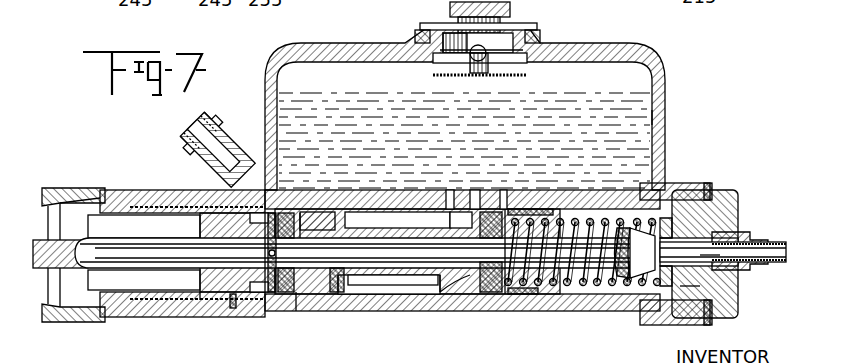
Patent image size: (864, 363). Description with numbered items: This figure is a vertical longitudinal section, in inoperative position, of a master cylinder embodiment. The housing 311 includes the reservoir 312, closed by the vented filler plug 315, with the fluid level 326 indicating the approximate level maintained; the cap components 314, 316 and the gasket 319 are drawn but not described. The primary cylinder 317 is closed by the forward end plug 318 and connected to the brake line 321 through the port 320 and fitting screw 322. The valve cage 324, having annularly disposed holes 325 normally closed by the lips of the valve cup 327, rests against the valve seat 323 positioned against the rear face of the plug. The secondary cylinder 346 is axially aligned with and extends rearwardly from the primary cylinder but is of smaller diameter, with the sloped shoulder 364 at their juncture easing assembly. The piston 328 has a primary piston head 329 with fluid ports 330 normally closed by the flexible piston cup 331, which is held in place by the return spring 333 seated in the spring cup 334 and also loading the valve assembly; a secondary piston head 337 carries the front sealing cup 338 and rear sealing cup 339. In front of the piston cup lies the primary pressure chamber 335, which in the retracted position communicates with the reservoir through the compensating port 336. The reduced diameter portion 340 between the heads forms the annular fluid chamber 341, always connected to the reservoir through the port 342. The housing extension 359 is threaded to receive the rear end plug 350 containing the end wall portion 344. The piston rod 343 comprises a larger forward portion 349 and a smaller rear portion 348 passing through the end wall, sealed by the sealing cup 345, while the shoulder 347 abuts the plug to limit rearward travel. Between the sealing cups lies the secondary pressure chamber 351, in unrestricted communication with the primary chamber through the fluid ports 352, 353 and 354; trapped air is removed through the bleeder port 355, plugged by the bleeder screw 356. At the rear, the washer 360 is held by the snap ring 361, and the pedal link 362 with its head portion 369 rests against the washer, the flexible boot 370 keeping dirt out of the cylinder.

The housing 311 is at (660, 129).
The reservoir 312 is at (640, 119).
The vent rod 314 is at (528, 75).
The vented filler plug 315 is at (511, 6).
The cap flange 316 is at (450, 16).
The primary cylinder 317 is at (596, 208).
The forward end plug 318 is at (730, 191).
The gasket 319 is at (712, 186).
The port 320 is at (704, 256).
The brake line 321 is at (787, 246).
The fitting screw 322 is at (750, 232).
The valve seat 323 is at (690, 291).
The valve cage 324 is at (672, 318).
The annularly disposed holes 325 is at (628, 296).
The fluid level 326 is at (348, 93).
The valve cup 327 is at (604, 296).
The piston 328 is at (445, 294).
The primary piston head 329 is at (500, 294).
The fluid ports 330 is at (506, 296).
The piston cup 331 is at (546, 302).
The return spring 333 is at (612, 290).
The spring cup 334 is at (548, 180).
The primary pressure chamber 335 is at (545, 212).
The compensating port 336 is at (504, 196).
The secondary piston head 337 is at (322, 215).
The front sealing cup 338 is at (330, 294).
The rear sealing cup 339 is at (308, 312).
The reduced diameter portion 340 is at (382, 284).
The annular fluid chamber 341 is at (380, 251).
The port 342 is at (476, 194).
The piston rod 343 is at (186, 263).
The end wall portion 344 is at (202, 302).
The sealing cup 345 is at (234, 310).
The secondary cylinder 346 is at (420, 292).
The shoulder 347 is at (272, 312).
The rear portion 348 is at (182, 243).
The forward portion 349 is at (296, 180).
The rear end plug 350 is at (140, 317).
The secondary pressure chamber 351 is at (314, 203).
The fluid port 352 is at (434, 250).
The fluid port 353 is at (290, 294).
The fluid port 354 is at (266, 250).
The bleeder port 355 is at (282, 180).
The bleeder screw 356 is at (214, 128).
The housing extension 359 is at (178, 196).
The washer 360 is at (90, 228).
The snap ring 361 is at (40, 215).
The pedal link 362 is at (44, 280).
The sloped shoulder 364 is at (450, 194).
The head portion 369 is at (90, 278).
The flexible boot 370 is at (88, 186).